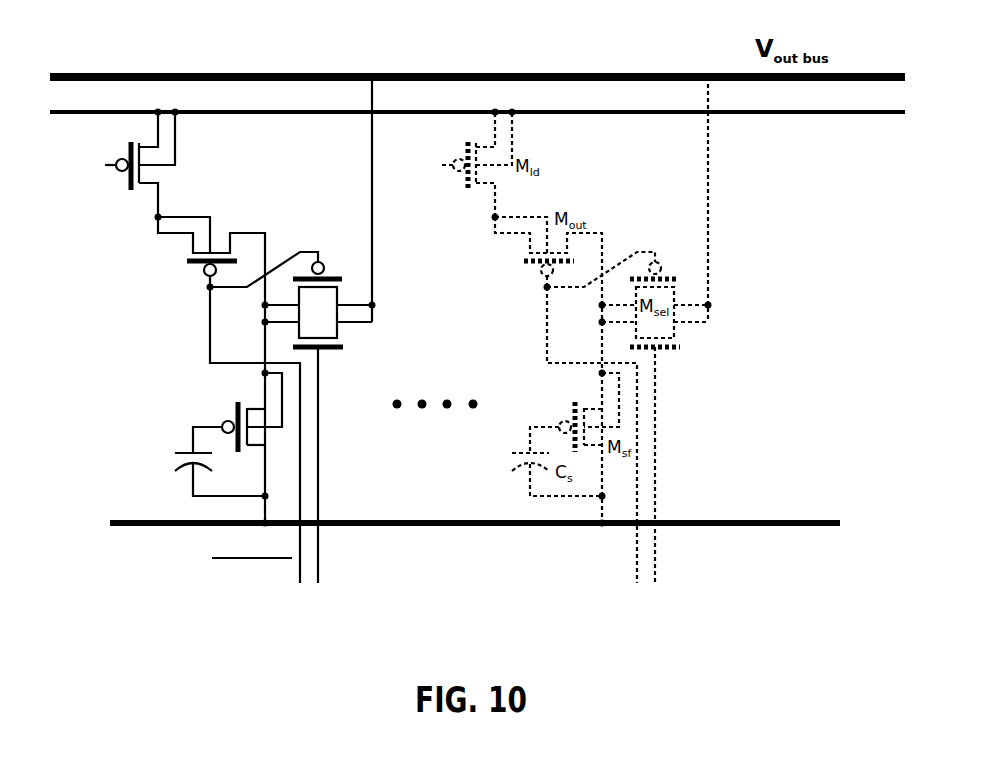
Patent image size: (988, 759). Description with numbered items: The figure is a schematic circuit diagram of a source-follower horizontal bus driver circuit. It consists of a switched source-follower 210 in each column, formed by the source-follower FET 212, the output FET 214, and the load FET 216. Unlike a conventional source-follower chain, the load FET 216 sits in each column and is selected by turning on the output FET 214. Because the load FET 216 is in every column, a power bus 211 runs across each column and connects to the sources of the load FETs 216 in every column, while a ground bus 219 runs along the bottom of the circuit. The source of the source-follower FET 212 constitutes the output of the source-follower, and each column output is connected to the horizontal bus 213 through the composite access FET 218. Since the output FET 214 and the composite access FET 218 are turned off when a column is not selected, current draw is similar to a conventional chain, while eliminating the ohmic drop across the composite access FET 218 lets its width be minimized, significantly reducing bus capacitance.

The switched source-follower 210 is at (120, 346).
The power bus 211 is at (603, 114).
The source-follower FET 212 is at (238, 409).
The horizontal bus 213 is at (145, 73).
The output FET 214 is at (197, 266).
The load FET 216 is at (124, 188).
The composite access FET 218 is at (380, 260).
The ground bus 219 is at (453, 526).